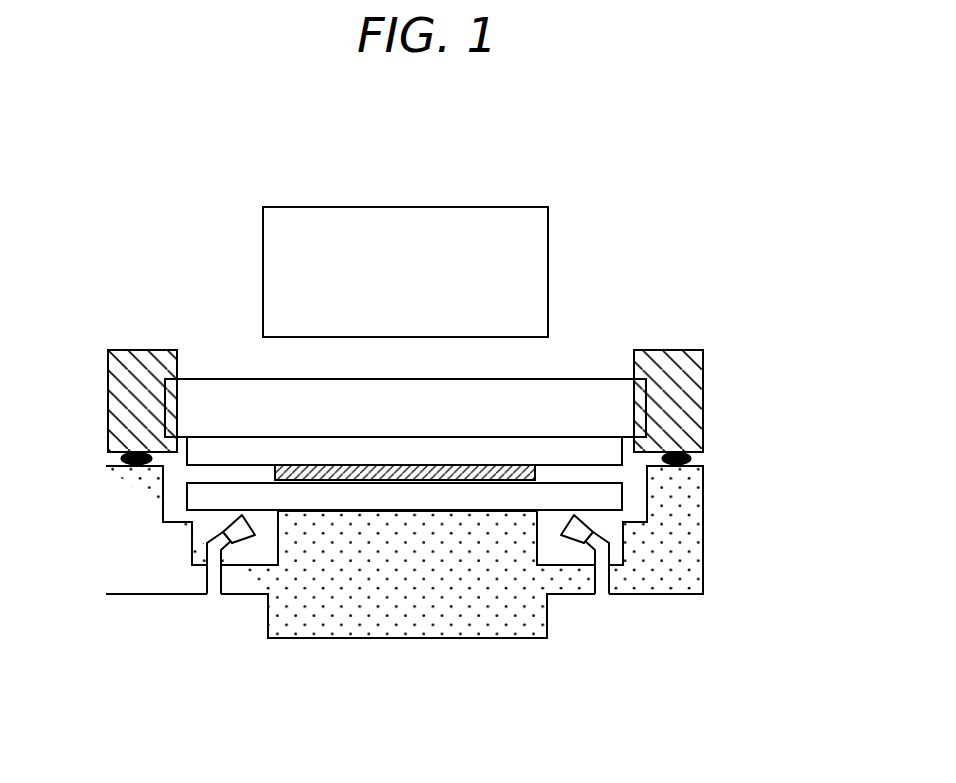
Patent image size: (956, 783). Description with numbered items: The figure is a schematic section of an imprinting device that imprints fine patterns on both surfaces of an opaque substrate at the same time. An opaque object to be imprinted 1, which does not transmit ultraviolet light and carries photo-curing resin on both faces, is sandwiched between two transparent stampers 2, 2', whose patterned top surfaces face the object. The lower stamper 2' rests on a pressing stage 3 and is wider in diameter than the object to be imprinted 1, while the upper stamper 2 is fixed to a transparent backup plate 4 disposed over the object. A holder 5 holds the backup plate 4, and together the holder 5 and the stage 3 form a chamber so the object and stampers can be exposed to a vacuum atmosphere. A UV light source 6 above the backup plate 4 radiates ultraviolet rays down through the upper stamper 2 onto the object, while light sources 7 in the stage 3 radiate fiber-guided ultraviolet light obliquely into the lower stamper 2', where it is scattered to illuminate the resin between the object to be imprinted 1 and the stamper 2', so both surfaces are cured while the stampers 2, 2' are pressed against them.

The object to be imprinted 1 is at (275, 465).
The stamper 2 is at (414, 374).
The stamper 2' is at (477, 490).
The pressing stage 3 is at (478, 553).
The transparent backup plate 4 is at (570, 395).
The holder 5 is at (677, 408).
The UV light source 6 is at (453, 230).
The light sources 7 is at (207, 535).